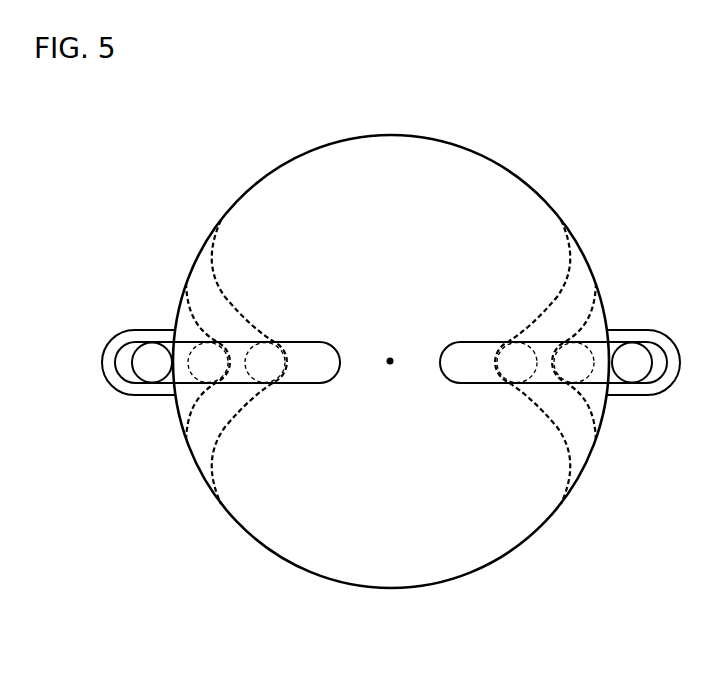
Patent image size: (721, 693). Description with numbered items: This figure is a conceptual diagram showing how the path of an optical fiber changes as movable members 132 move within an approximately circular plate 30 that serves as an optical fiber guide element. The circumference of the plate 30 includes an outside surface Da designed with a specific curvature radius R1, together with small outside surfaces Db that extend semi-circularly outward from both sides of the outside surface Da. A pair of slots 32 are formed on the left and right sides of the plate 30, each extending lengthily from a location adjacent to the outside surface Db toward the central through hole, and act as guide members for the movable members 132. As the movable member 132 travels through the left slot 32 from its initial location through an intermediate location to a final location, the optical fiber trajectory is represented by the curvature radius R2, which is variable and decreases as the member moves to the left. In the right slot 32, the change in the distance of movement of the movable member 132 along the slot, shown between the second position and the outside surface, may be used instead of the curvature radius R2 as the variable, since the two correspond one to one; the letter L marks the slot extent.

The circular plate 30 is at (390, 590).
The slots 32 is at (320, 364).
The movable members 132 is at (243, 350).
The outside surface Da is at (263, 179).
The small outside surface Db is at (102, 361).
The curvature radius R1 is at (284, 172).
The curvature radius R2 is at (207, 340).
The slot length L is at (668, 296).